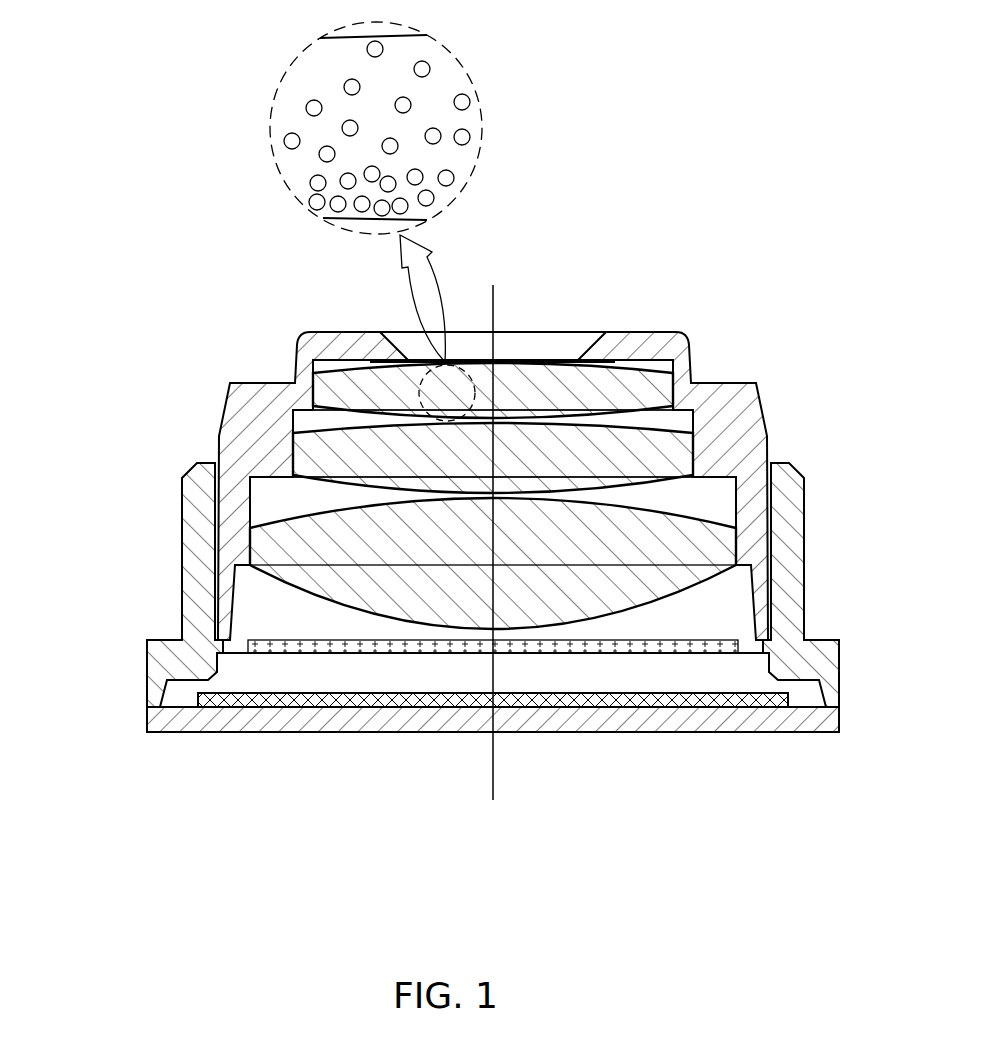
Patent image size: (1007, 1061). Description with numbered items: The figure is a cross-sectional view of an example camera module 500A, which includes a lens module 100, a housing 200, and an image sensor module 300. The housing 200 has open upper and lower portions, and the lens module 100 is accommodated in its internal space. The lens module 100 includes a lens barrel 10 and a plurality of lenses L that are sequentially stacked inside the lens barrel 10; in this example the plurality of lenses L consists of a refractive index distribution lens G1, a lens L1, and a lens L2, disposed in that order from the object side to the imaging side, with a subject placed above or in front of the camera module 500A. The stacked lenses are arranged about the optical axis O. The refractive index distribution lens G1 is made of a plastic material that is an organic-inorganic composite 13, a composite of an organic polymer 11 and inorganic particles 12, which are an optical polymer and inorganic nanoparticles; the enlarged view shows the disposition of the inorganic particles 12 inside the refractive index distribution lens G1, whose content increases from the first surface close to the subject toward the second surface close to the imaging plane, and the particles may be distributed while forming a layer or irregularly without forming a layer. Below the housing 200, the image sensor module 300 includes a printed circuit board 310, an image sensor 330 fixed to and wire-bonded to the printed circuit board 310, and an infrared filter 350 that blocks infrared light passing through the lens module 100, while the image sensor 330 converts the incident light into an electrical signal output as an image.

The lens barrel 10 is at (732, 388).
The organic polymer 11 is at (445, 52).
The inorganic particle 12 is at (467, 98).
The organic-inorganic composite 13 is at (540, 32).
The lens module 100 is at (630, 318).
The housing 200 is at (157, 658).
The image sensor module 300 is at (283, 793).
The printed circuit board 310 is at (183, 720).
The image sensor 330 is at (255, 700).
The infrared filter 350 is at (423, 645).
The camera module 500A is at (788, 141).
The refractive index distribution lens G1 is at (310, 376).
The lens L1 is at (308, 449).
The lens L2 is at (268, 547).
The plurality of lenses L is at (120, 437).
The optical axis O is at (493, 527).